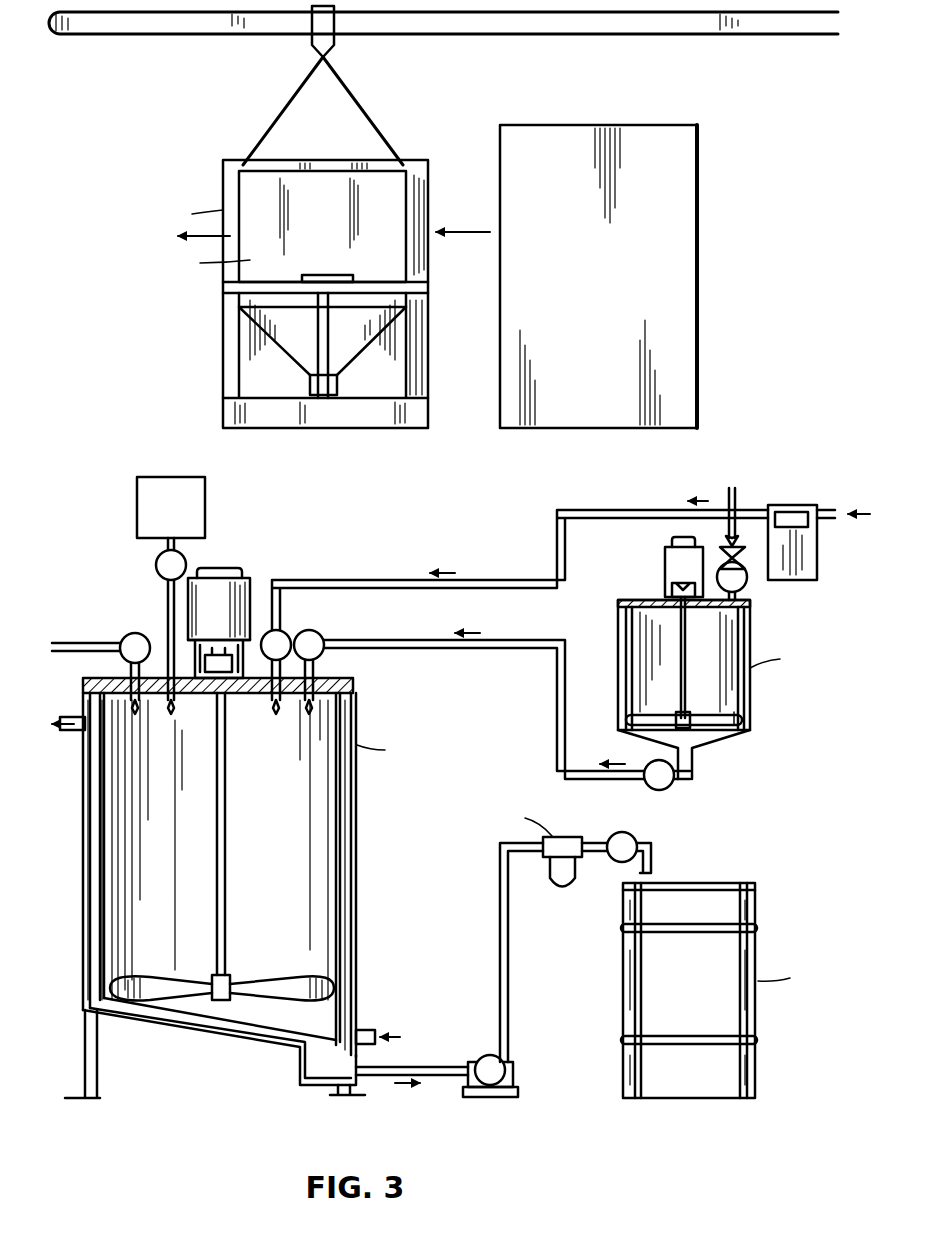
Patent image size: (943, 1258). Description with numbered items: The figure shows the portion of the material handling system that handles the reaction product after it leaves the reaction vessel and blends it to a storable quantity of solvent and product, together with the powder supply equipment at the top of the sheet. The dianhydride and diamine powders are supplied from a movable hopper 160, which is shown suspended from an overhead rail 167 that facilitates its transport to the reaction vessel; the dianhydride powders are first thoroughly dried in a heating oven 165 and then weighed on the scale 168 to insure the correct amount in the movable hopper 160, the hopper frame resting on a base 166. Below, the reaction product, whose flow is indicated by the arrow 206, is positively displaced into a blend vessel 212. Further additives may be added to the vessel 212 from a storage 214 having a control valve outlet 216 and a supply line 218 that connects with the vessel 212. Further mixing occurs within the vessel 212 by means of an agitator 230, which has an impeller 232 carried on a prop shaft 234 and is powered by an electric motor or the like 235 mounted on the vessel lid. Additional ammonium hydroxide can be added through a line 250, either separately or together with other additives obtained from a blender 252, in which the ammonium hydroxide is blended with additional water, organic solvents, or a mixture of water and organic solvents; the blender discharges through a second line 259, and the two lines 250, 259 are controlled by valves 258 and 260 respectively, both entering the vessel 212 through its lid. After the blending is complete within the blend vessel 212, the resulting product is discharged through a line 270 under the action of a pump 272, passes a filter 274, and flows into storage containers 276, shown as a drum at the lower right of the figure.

The movable hopper 160 is at (390, 207).
The heating oven 165 is at (688, 336).
The hopper base 166 is at (362, 420).
The overhead rail 167 is at (185, 36).
The scale 168 is at (612, 35).
The reaction product flow 206 is at (105, 632).
The vessel 212 is at (122, 822).
The storage 214 is at (150, 483).
The control valve outlet 216 is at (155, 565).
The supply line 218 is at (165, 603).
The agitator 230 is at (267, 847).
The impeller 232 is at (338, 975).
The prop shaft 234 is at (228, 770).
The electric motor 235 is at (244, 580).
The line 250 is at (481, 580).
The blender 252 is at (750, 700).
The valve 258 is at (288, 636).
The line 259 is at (520, 640).
The valve 260 is at (322, 652).
The line 270 is at (440, 1080).
The pump 272 is at (510, 1080).
The filter 274 is at (565, 888).
The storage containers 276 is at (758, 950).